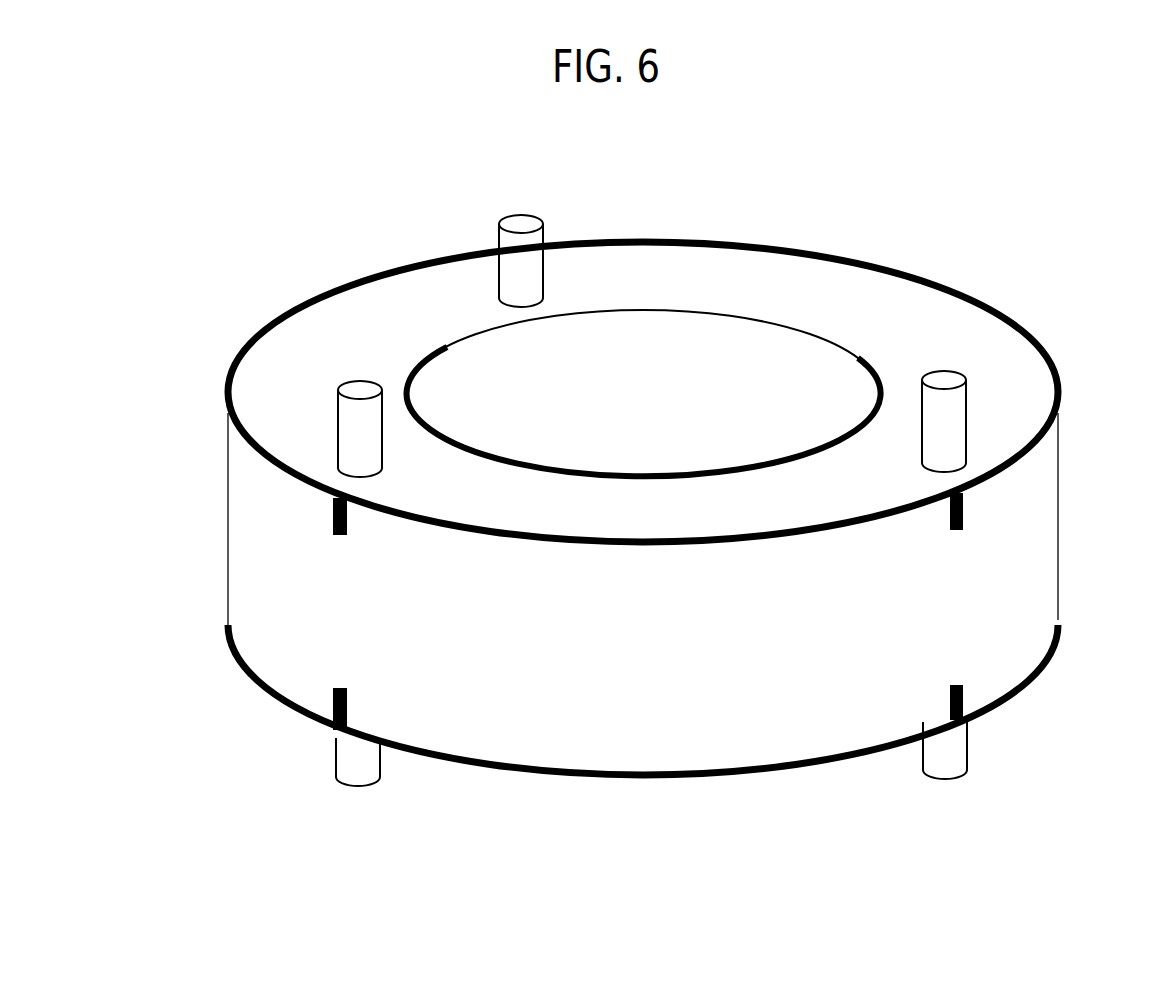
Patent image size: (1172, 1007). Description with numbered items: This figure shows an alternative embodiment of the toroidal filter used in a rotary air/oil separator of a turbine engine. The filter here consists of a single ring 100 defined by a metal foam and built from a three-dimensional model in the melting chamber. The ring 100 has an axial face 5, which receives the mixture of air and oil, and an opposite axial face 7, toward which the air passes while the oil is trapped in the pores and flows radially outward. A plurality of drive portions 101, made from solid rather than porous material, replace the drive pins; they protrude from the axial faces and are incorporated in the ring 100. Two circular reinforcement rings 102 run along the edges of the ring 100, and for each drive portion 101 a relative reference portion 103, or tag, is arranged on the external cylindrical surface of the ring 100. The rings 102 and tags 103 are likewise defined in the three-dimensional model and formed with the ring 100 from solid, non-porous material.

The ring 100 is at (290, 118).
The drive portions 101 is at (512, 218).
The circular reinforcement rings 102 is at (702, 238).
The reference portion 103 is at (340, 688).
The axial face 5 is at (848, 312).
The opposite axial face 7 is at (572, 779).